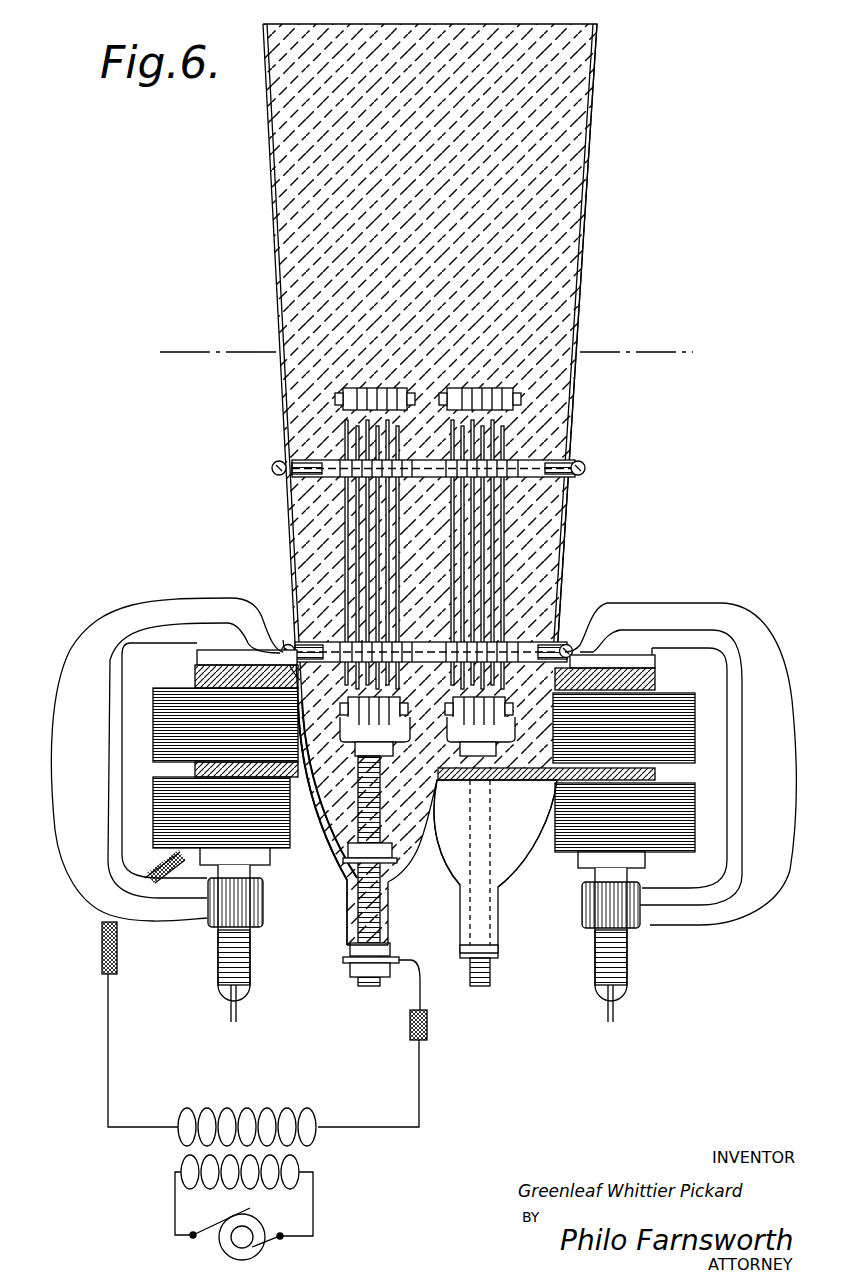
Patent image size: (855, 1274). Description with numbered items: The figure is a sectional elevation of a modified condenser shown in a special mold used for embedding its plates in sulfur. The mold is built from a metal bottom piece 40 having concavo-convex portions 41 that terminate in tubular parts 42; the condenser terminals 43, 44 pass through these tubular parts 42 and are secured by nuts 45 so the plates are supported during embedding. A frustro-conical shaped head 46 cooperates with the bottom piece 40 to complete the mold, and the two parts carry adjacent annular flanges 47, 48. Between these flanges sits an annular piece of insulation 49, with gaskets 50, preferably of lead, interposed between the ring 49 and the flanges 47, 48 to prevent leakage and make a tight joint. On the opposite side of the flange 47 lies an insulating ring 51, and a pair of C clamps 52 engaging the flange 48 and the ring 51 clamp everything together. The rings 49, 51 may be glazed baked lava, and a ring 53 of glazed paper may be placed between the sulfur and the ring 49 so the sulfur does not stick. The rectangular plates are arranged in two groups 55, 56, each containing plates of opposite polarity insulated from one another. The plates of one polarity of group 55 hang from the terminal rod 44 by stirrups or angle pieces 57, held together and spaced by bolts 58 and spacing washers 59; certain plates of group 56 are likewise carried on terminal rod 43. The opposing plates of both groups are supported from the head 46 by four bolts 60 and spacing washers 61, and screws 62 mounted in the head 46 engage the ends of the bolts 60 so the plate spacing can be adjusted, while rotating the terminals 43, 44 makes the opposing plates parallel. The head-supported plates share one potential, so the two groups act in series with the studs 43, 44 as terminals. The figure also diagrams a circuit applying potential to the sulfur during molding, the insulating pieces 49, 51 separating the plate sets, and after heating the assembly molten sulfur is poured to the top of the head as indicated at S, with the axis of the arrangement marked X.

The sulfur fill level S is at (572, 180).
The axis X is at (190, 352).
The metal bottom piece 40 is at (413, 862).
The concavo-convex portions 41 is at (320, 858).
The tubular parts 42 is at (386, 931).
The terminal rod 43 is at (381, 905).
The terminal rod 44 is at (492, 812).
The nuts 45 is at (389, 948).
The frustro-conical head 46 is at (578, 318).
The annular flange 47 is at (656, 774).
The annular flange 48 is at (656, 662).
The annular insulating piece 49 is at (690, 730).
The gaskets 50 is at (656, 688).
The insulating ring 51 is at (688, 821).
The C clamps 52 is at (796, 783).
The glazed paper ring 53 is at (287, 644).
The plate group 55 is at (520, 540).
The plate group 56 is at (345, 520).
The stirrups or angle piece 57 is at (456, 756).
The bolts 58 is at (518, 402).
The spacing washers 59 is at (505, 393).
The bolts 60 is at (540, 463).
The spacing washers 61 is at (540, 642).
The screws 62 is at (586, 468).